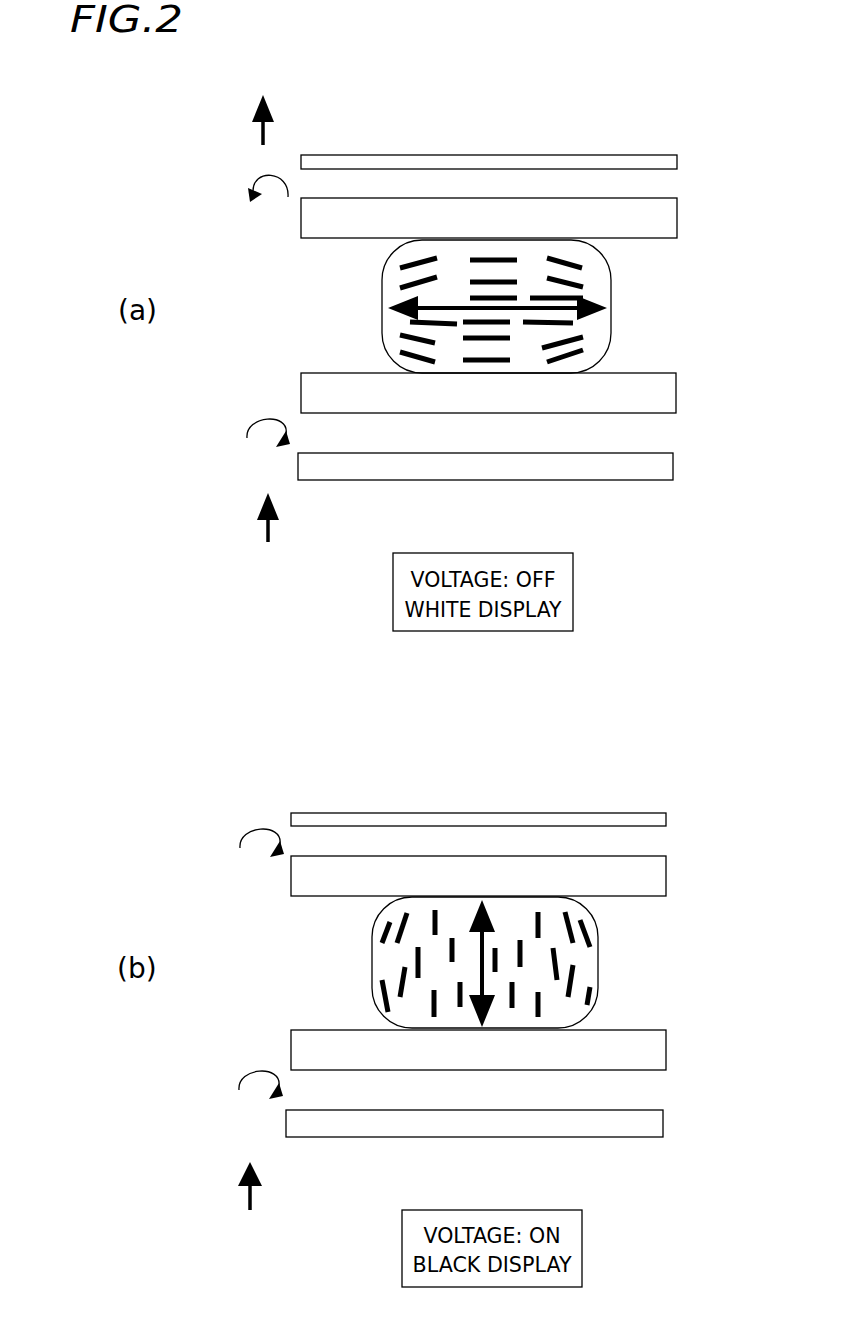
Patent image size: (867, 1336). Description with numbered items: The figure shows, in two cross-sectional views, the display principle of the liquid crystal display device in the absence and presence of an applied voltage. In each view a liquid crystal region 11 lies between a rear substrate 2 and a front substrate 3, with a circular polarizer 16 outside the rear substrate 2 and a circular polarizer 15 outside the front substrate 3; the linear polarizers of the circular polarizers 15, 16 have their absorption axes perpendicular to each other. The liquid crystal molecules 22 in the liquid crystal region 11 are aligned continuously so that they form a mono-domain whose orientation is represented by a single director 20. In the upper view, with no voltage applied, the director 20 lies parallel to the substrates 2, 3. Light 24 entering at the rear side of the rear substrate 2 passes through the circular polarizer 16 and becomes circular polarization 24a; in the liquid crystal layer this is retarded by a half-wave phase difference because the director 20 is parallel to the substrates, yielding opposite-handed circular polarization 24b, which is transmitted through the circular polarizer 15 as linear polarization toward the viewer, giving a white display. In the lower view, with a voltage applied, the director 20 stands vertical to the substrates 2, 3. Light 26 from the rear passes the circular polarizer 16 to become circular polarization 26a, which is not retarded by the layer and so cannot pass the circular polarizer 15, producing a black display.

The rear substrate 2 is at (670, 402).
The substrate 3 is at (667, 220).
The liquid crystal region 11 is at (597, 278).
The circular polarizer 15 is at (672, 163).
The circular polarizer 16 is at (665, 467).
The director 20 is at (450, 306).
The liquid crystal molecules 22 is at (580, 340).
The light 24 is at (269, 540).
The circular polarization 24a is at (248, 432).
The opposite-handed circular polarization 24b is at (247, 191).
The light 26 is at (247, 1203).
The circular polarization 26a is at (240, 965).